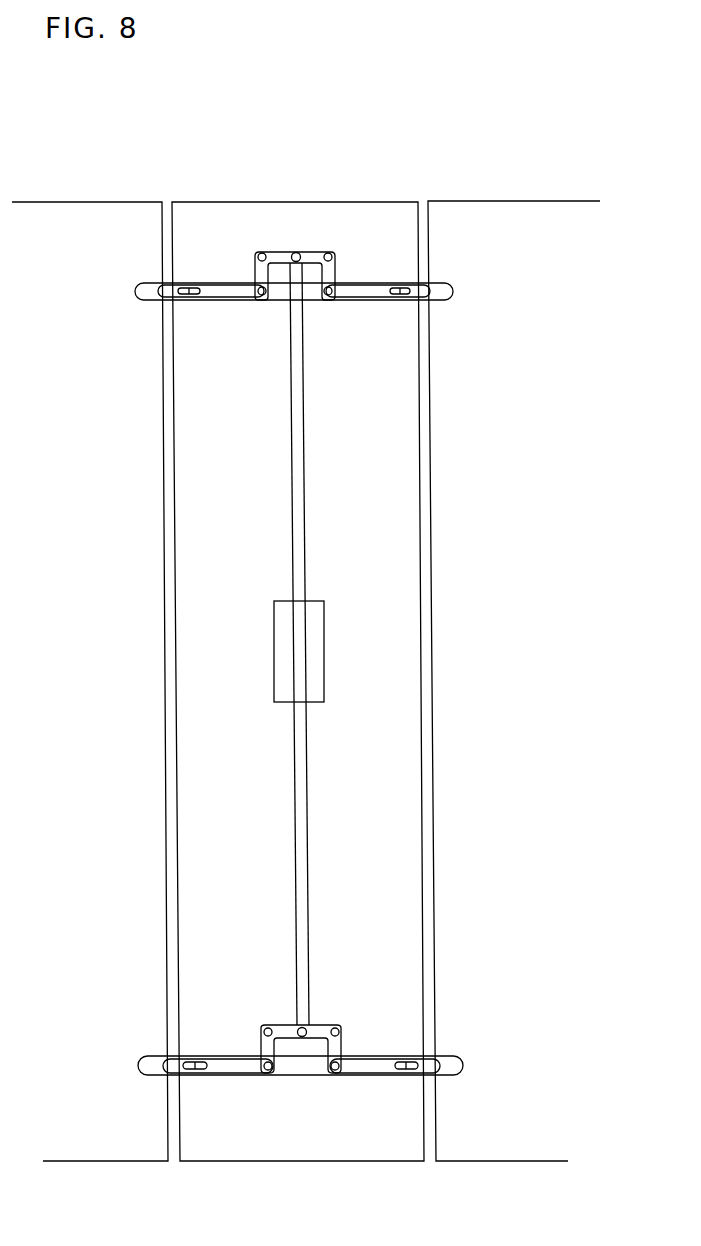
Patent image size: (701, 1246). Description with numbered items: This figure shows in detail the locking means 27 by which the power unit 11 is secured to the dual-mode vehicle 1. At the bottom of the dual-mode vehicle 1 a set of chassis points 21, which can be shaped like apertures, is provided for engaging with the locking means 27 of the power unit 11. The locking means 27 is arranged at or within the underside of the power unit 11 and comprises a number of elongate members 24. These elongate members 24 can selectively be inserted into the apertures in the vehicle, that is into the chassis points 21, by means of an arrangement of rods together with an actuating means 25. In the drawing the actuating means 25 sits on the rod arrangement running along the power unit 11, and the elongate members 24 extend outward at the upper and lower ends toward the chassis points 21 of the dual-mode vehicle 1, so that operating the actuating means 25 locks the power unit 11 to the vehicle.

The dual-mode vehicle 1 is at (60, 457).
The power unit 11 is at (237, 525).
The chassis points 21 is at (453, 288).
The elongate members 24 is at (235, 300).
The actuating means 25 is at (340, 651).
The locking means 27 is at (455, 612).